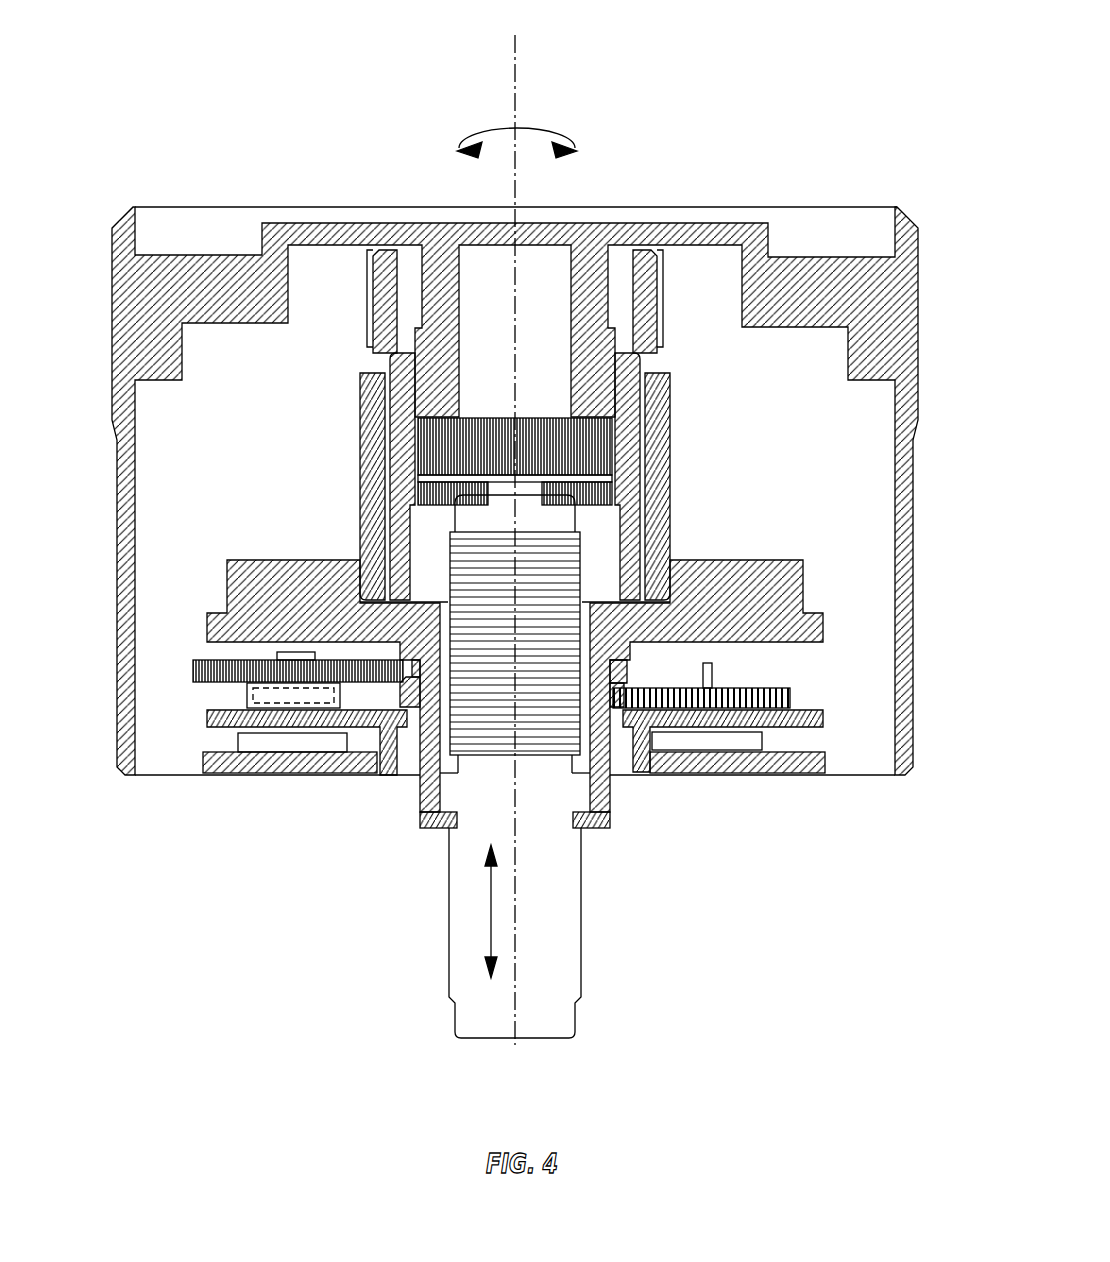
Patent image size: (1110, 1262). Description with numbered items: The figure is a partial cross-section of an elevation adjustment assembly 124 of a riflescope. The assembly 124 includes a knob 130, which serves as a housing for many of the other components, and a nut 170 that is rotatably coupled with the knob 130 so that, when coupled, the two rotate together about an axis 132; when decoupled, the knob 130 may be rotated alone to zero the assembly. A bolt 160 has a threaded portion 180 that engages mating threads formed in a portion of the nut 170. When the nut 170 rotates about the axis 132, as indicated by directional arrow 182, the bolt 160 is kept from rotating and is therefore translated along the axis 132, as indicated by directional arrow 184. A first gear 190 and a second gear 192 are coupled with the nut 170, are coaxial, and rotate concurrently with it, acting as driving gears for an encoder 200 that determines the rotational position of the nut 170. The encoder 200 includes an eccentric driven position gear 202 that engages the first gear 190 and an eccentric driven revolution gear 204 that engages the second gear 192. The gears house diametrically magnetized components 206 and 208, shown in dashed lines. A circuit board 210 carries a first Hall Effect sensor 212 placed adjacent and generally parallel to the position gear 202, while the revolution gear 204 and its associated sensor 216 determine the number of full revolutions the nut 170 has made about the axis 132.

The elevation adjustment assembly 124 is at (690, 150).
The knob 130 is at (119, 735).
The axis 132 is at (518, 105).
The bolt 160 is at (582, 890).
The nut 170 is at (640, 600).
The threaded portion 180 is at (592, 590).
The directional arrow 182 is at (483, 126).
The directional arrow 184 is at (490, 903).
The first gear 190 is at (408, 675).
The second gear 192 is at (612, 708).
The encoder 200 is at (300, 782).
The position gear 202 is at (207, 658).
The revolution gear 204 is at (780, 688).
The diametrically magnetized component 206 is at (247, 698).
The diametrically magnetized component 208 is at (753, 688).
The circuit board 210 is at (823, 762).
The first Hall Effect sensor 212 is at (237, 740).
The sensor 216 is at (763, 745).